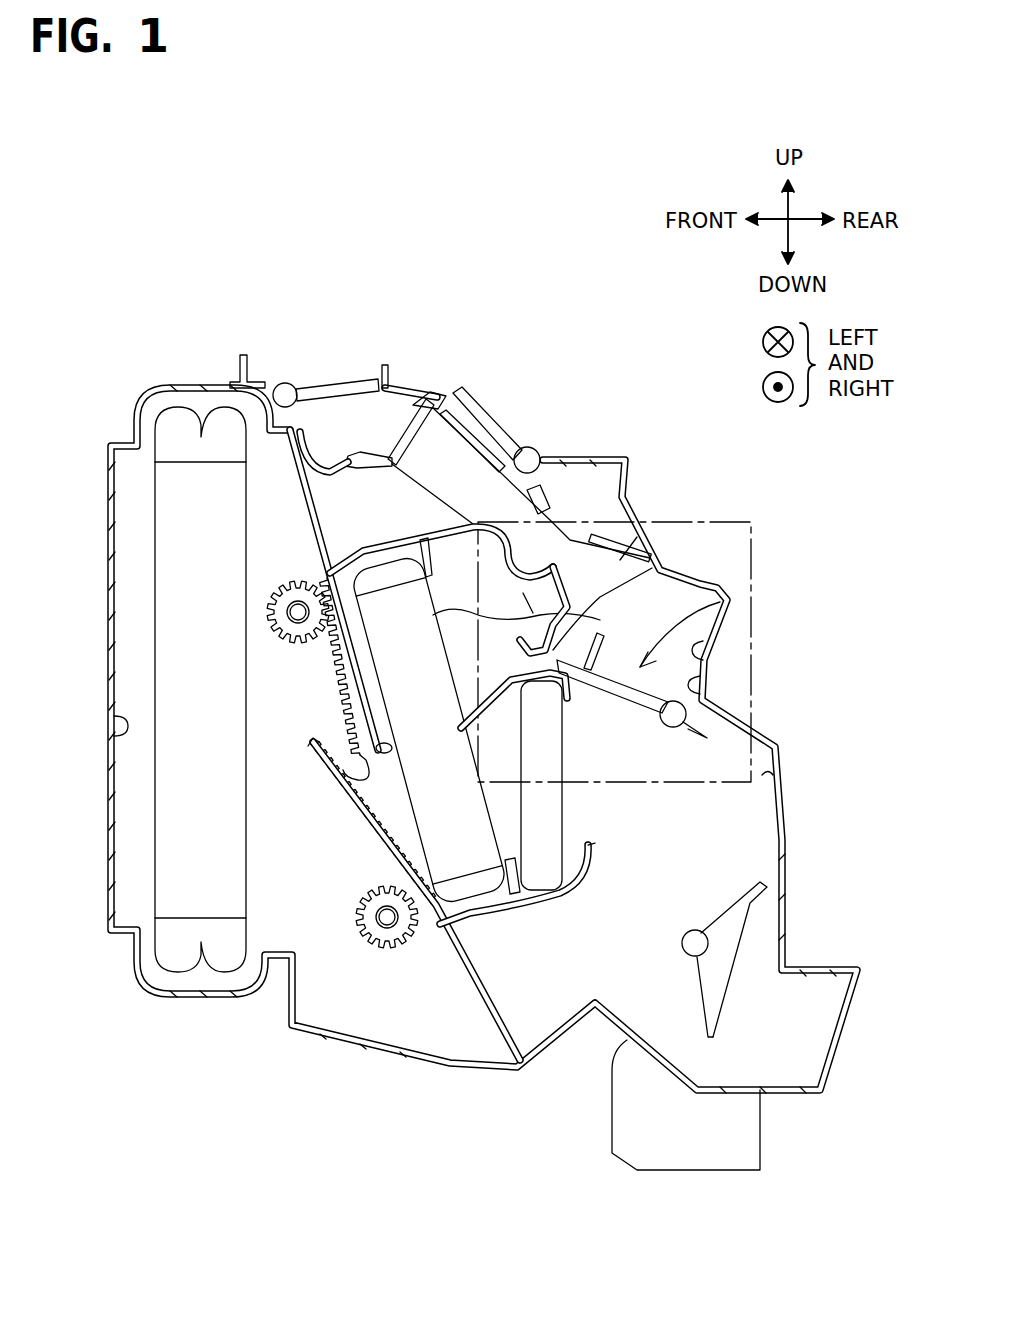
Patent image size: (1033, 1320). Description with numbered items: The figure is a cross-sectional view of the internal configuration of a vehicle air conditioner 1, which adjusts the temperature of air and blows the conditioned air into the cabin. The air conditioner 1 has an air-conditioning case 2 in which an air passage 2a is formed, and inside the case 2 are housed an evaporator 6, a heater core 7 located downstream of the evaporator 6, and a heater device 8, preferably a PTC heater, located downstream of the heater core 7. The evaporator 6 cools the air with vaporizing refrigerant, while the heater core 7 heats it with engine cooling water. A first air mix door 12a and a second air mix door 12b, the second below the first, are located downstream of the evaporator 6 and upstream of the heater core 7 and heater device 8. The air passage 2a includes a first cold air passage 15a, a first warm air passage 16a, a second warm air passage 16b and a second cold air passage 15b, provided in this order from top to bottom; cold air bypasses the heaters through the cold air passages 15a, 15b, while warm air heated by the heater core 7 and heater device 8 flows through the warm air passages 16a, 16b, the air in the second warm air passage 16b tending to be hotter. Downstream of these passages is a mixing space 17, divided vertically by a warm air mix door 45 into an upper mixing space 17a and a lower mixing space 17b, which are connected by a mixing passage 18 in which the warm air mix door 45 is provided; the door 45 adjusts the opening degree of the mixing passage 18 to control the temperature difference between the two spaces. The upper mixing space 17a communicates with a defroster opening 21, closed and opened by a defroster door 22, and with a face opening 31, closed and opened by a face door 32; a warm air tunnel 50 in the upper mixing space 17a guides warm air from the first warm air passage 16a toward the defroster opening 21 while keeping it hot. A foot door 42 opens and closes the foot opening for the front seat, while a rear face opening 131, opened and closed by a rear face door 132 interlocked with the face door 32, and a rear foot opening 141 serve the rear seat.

The air conditioner 1 is at (97, 375).
The air-conditioning case 2 is at (111, 766).
The air passage 2a is at (112, 735).
The evaporator 6 is at (190, 483).
The heater core 7 is at (460, 857).
The heater device 8 is at (543, 860).
The first air mix door 12a is at (332, 642).
The second air mix door 12b is at (380, 867).
The first cold air passage 15a is at (387, 540).
The second cold air passage 15b is at (555, 1040).
The first warm air passage 16a is at (347, 717).
The second warm air passage 16b is at (380, 813).
The mixing space 17 is at (838, 660).
The upper mixing space 17a is at (700, 658).
The lower mixing space 17b is at (772, 772).
The mixing passage 18 is at (697, 690).
The defroster opening 21 is at (245, 378).
The defroster door 22 is at (336, 384).
The face opening 31 is at (446, 396).
The face door 32 is at (497, 417).
The foot door 42 is at (622, 667).
The warm air mix door 45 is at (722, 602).
The warm air tunnel 50 is at (650, 533).
The rear face opening 131 is at (765, 945).
The rear face door 132 is at (715, 953).
The rear foot opening 141 is at (700, 1170).